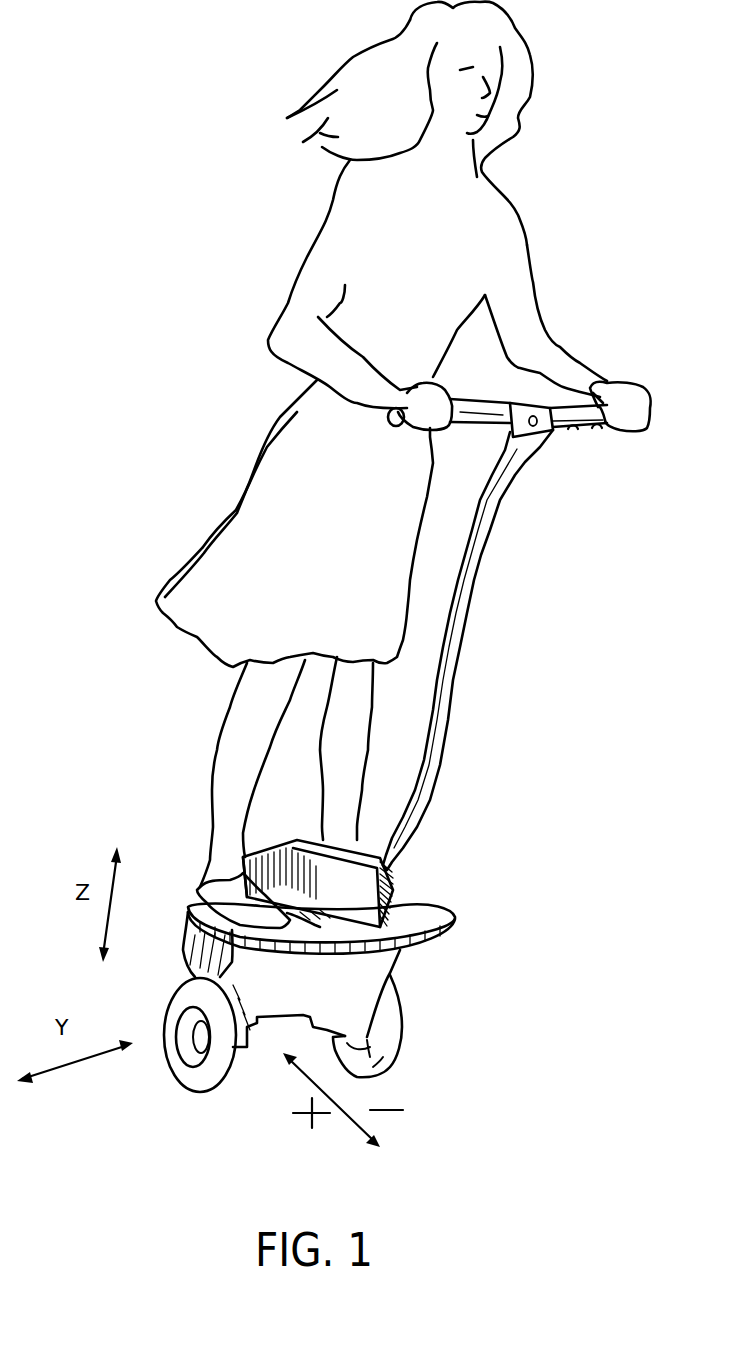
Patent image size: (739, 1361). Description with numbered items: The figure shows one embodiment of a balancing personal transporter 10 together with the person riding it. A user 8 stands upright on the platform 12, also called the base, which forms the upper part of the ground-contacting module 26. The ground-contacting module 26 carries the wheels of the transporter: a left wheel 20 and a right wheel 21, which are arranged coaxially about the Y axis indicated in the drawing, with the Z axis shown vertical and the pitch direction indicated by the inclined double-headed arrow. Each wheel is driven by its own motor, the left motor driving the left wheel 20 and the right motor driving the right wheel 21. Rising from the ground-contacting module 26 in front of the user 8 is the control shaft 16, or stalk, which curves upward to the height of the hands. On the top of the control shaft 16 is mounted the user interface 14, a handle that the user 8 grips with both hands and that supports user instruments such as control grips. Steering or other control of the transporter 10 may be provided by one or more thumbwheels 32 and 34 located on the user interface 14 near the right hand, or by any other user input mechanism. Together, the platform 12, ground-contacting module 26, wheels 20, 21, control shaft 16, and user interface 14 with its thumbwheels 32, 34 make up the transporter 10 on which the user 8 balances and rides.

The user 8 is at (513, 217).
The balancing personal transporter 10 is at (142, 460).
The platform 12 is at (453, 927).
The user interface 14 is at (537, 433).
The control shaft 16 is at (470, 613).
The left wheel 20 is at (400, 1047).
The right wheel 21 is at (193, 1090).
The ground-contacting module 26 is at (435, 1000).
The thumbwheel 32 is at (607, 430).
The thumbwheel 34 is at (577, 437).